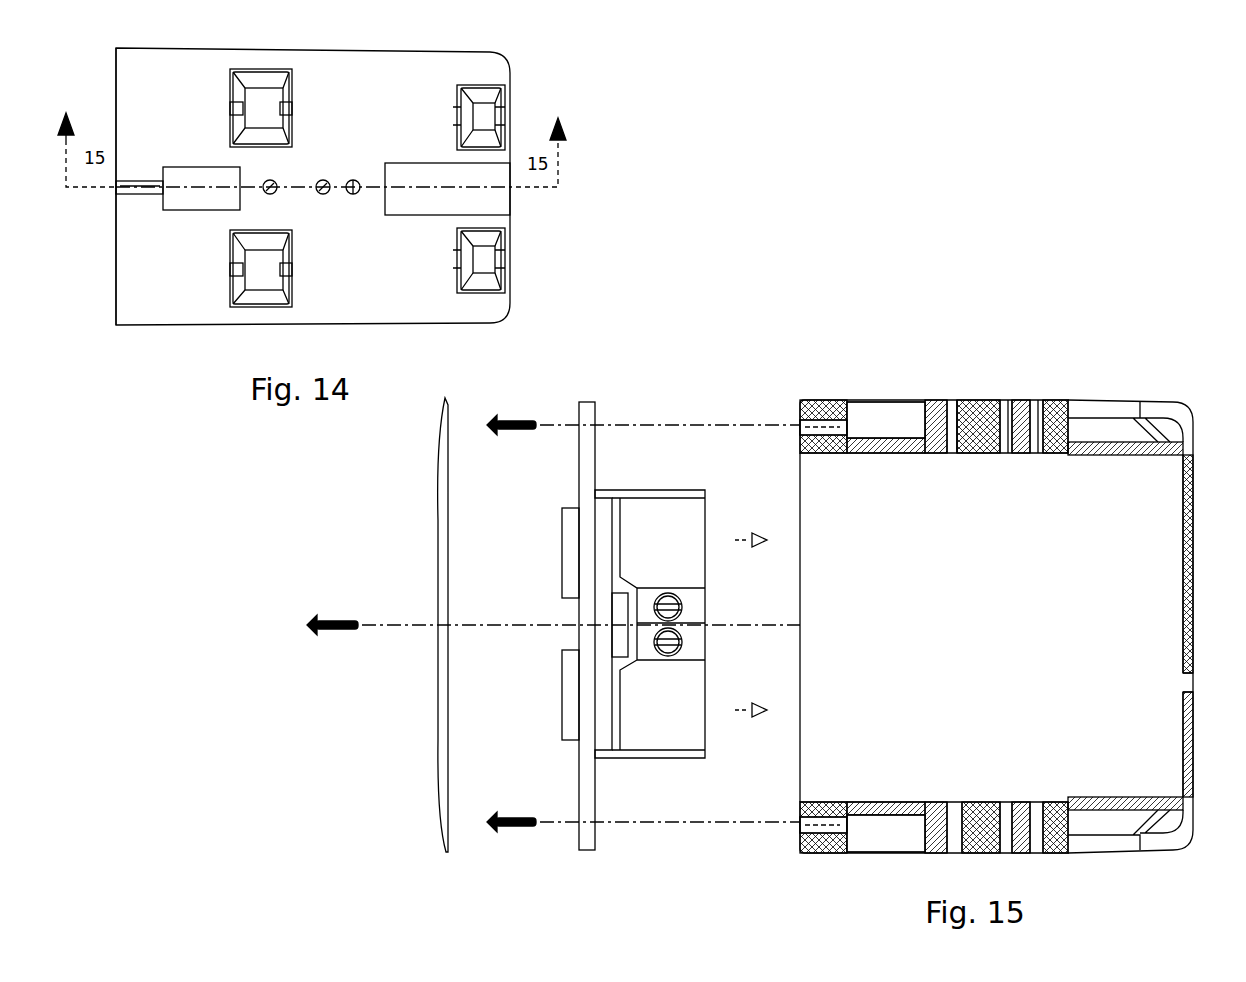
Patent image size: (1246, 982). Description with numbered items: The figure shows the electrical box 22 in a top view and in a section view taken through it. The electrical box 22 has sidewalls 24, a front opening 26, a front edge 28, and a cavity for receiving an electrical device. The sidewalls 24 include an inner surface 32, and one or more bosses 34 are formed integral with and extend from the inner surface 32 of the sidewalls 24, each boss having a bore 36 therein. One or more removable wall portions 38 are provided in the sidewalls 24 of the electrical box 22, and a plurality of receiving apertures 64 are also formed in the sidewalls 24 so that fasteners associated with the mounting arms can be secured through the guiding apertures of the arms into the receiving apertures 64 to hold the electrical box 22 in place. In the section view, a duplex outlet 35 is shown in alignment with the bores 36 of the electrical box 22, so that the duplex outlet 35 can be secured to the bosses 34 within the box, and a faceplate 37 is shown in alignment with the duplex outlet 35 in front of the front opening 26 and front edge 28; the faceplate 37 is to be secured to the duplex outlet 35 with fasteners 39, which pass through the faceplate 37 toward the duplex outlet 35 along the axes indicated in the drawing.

In FIG. 14, the electrical box 22 is at (607, 150).
In FIG. 15, the electrical box 22 is at (908, 318).
In FIG. 14, the sidewalls 24 is at (358, 279).
In FIG. 15, the sidewalls 24 is at (1101, 413).
In FIG. 15, the front opening 26 is at (808, 610).
In FIG. 14, the front edge 28 is at (116, 229).
In FIG. 15, the front edge 28 is at (800, 667).
In FIG. 15, the inner surface 32 is at (1072, 455).
In FIG. 15, the bosses 34 is at (817, 452).
In FIG. 15, the duplex outlet 35 is at (632, 408).
In FIG. 15, the bores 36 is at (822, 432).
In FIG. 15, the faceplate 37 is at (451, 426).
In FIG. 14, the removable wall portions 38 is at (262, 110).
In FIG. 15, the removable wall portions 38 is at (1183, 604).
In FIG. 15, the fasteners 39 is at (507, 433).
In FIG. 14, the receiving apertures 64 is at (352, 180).
In FIG. 15, the receiving apertures 64 is at (1038, 400).